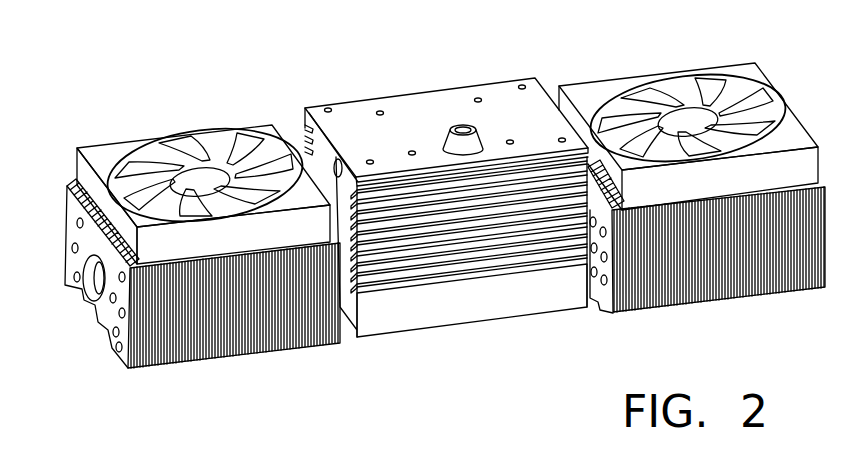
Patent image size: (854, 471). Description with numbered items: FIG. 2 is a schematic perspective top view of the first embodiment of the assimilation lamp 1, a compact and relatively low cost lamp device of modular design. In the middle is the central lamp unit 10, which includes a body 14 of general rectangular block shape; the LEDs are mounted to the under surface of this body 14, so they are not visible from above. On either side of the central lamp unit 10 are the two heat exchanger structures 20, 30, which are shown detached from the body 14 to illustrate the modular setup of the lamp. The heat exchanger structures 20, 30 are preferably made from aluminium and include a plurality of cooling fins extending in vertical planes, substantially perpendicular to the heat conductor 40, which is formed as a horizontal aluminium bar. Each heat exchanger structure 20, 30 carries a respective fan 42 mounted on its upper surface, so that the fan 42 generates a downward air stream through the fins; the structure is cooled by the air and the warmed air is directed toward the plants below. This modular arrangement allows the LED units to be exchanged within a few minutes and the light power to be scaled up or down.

The assimilation lamp device 1 is at (120, 72).
The central lamp unit 10 is at (470, 348).
The body 14 is at (502, 246).
The heat exchanger structure 20 is at (746, 322).
The heat exchanger structure 30 is at (248, 375).
The heat conductor 40 is at (90, 283).
The fan 42 is at (740, 113).